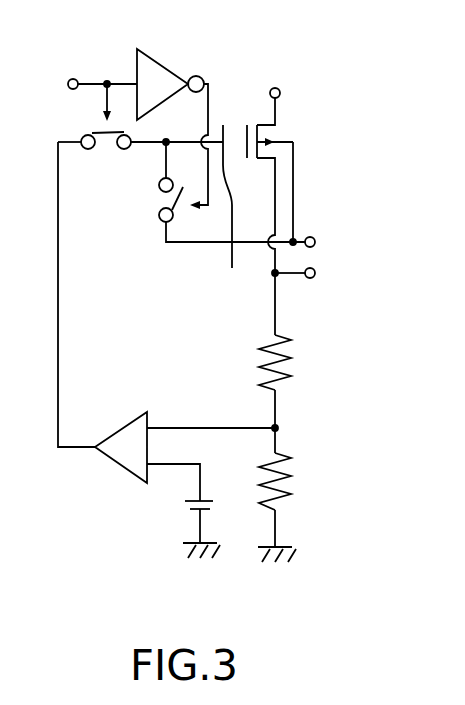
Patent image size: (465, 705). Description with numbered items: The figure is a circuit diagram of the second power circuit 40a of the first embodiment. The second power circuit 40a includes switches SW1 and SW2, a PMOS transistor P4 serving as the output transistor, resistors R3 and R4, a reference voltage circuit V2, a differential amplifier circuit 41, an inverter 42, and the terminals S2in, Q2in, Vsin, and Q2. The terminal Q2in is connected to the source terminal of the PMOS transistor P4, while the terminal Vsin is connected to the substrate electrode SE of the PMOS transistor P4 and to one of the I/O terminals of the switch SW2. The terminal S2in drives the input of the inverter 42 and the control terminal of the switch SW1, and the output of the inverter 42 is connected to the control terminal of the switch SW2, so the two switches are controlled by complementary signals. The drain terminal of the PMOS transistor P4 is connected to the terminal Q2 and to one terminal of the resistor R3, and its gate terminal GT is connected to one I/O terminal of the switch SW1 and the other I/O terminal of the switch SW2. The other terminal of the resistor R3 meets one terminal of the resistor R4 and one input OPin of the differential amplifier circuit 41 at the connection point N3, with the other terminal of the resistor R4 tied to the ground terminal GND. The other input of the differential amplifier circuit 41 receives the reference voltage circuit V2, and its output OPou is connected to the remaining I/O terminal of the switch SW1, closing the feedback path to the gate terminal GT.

The second power circuit 40a is at (305, 33).
The inverter 42 is at (162, 62).
The differential amplifier circuit 41 is at (125, 472).
The switch SW1 is at (112, 148).
The switch SW2 is at (158, 220).
The PMOS transistor P4 is at (280, 132).
The substrate electrode SE is at (295, 170).
The gate terminal GT is at (230, 209).
The resistor R3 is at (277, 340).
The resistor R4 is at (277, 455).
The connection point N3 is at (283, 408).
The reference voltage circuit V2 is at (193, 511).
The input of the differential amplifier circuit OPin is at (158, 415).
The output of the differential amplifier circuit OPou is at (70, 433).
The terminal S2in is at (87, 86).
The terminal Q2in is at (273, 91).
The terminal Vsin is at (332, 241).
The terminal Q2 is at (310, 278).
The ground terminal GND is at (316, 536).